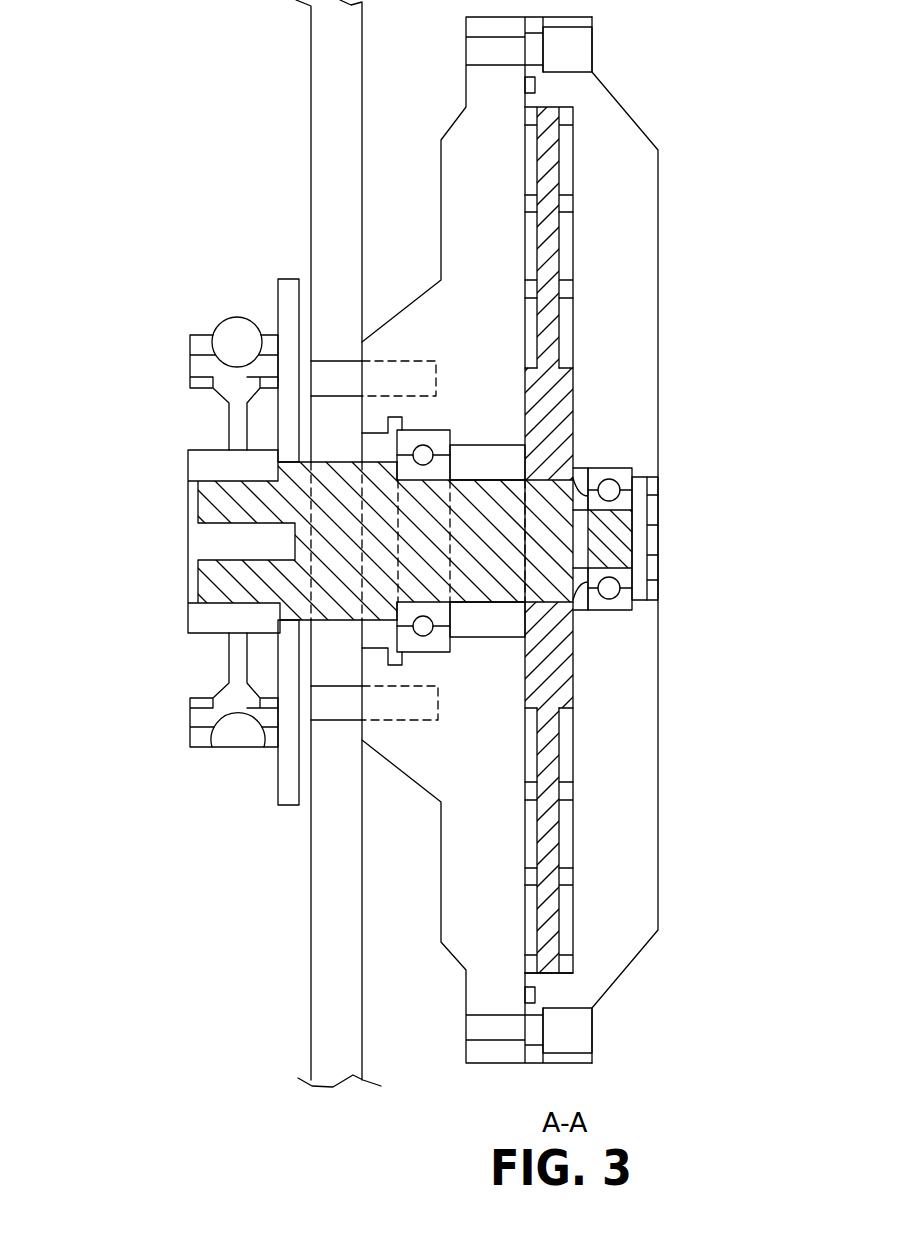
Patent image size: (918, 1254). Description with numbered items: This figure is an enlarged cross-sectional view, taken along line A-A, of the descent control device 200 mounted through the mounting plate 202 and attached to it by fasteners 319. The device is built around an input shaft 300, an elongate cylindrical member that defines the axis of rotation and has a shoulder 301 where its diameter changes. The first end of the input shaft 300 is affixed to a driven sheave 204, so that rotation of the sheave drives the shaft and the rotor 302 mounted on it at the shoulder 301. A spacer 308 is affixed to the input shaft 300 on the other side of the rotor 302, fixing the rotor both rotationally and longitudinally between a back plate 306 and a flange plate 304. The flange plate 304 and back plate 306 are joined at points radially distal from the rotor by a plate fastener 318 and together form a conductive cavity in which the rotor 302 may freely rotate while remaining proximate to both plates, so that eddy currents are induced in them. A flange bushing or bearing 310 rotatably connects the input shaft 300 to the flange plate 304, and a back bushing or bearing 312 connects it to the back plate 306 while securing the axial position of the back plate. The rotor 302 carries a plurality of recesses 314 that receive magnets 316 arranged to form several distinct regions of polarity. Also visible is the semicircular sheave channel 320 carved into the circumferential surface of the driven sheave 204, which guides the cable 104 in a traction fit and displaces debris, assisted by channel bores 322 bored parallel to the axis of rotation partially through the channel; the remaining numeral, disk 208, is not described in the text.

The descent control device 200 is at (641, 87).
The mounting plate 202 is at (332, 1045).
The driven sheave 204 is at (188, 633).
The disk 208 is at (283, 797).
The cable 104 is at (232, 335).
The input shaft 300 is at (227, 580).
The shoulder 301 is at (525, 580).
The rotor 302 is at (565, 395).
The flange plate 304 is at (472, 885).
The back plate 306 is at (620, 913).
The spacer 308 is at (585, 605).
The flange bushing or bearing 310 is at (427, 433).
The back bushing or bearing 312 is at (612, 468).
The recesses 314 is at (575, 847).
The magnets 316 is at (575, 755).
The plate fastener 318 is at (573, 1030).
The fasteners 319 is at (383, 705).
The sheave channel 320 is at (242, 735).
The channel bores 322 is at (193, 363).